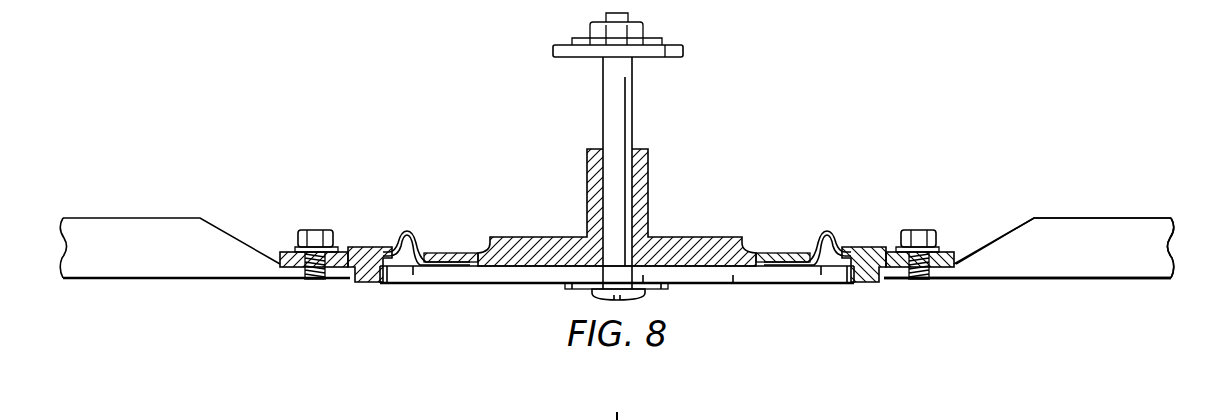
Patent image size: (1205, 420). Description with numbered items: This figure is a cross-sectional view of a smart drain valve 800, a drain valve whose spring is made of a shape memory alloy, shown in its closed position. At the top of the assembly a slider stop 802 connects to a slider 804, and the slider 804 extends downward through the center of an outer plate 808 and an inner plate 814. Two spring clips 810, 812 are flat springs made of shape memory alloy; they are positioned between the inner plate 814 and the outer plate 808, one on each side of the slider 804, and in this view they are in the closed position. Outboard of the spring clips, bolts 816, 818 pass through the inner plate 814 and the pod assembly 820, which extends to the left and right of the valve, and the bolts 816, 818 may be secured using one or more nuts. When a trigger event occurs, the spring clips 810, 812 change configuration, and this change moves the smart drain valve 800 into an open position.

The smart drain valve 800 is at (325, 124).
The slider stop 802 is at (684, 52).
The slider 804 is at (602, 97).
The outer plate 808 is at (467, 284).
The spring clip 810 is at (400, 230).
The spring clip 812 is at (830, 231).
The inner plate 814 is at (366, 283).
The bolt 816 is at (918, 229).
The bolt 818 is at (314, 229).
The pod assembly 820 is at (1068, 218).